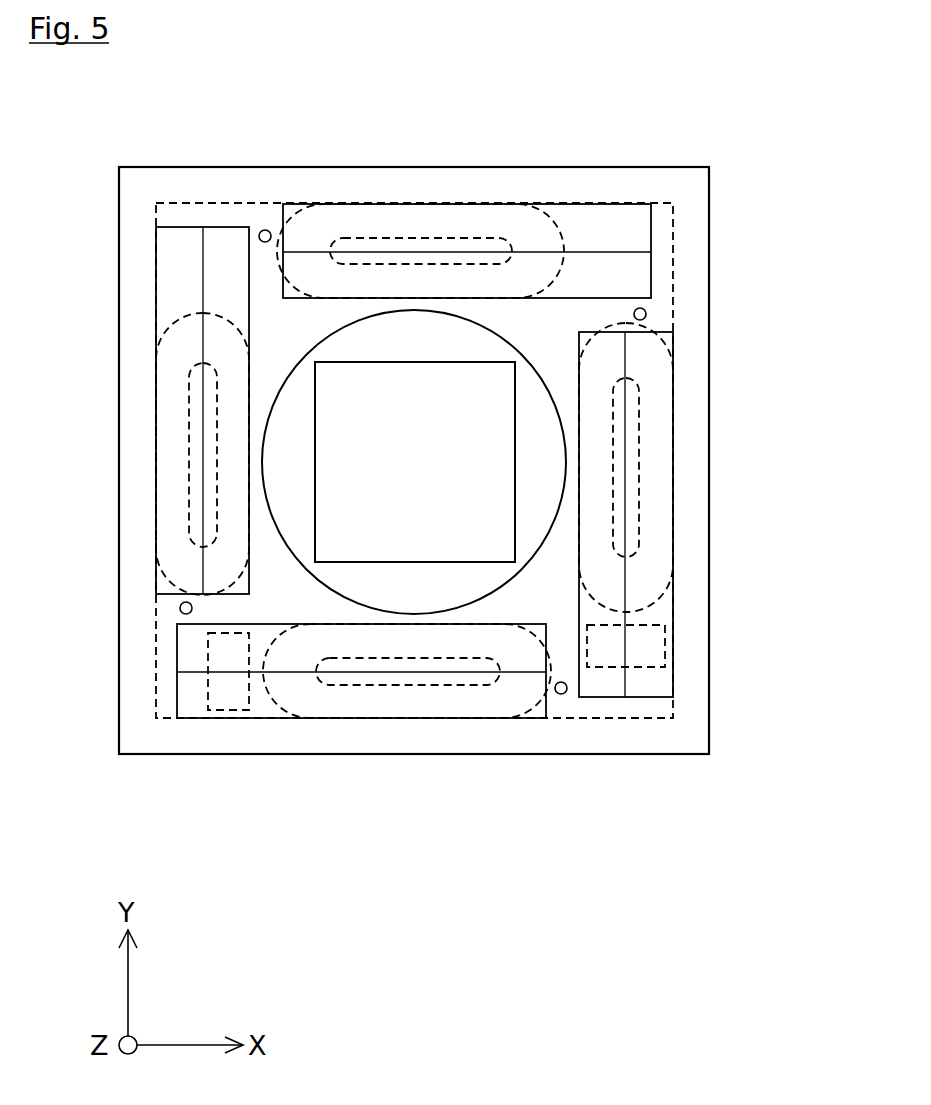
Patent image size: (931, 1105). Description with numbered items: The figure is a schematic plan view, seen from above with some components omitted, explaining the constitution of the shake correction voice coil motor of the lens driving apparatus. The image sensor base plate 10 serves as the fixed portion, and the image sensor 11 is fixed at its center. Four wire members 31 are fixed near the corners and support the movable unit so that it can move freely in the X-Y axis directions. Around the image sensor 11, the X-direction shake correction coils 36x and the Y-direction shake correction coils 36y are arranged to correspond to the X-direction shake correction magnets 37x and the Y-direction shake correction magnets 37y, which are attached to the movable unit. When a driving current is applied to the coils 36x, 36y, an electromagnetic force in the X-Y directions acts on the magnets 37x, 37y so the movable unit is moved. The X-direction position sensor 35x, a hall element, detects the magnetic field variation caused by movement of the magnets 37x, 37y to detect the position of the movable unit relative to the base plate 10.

The image sensor base plate 10 is at (130, 268).
The image sensor 11 is at (412, 390).
The wire member 31 is at (266, 230).
The X-direction position sensor 35x is at (648, 648).
The X-direction shake correction coil 36x is at (167, 368).
The Y-direction shake correction coil 36y is at (519, 218).
The X-direction shake correction magnet 37x is at (228, 240).
The Y-direction shake correction magnet 37y is at (637, 277).